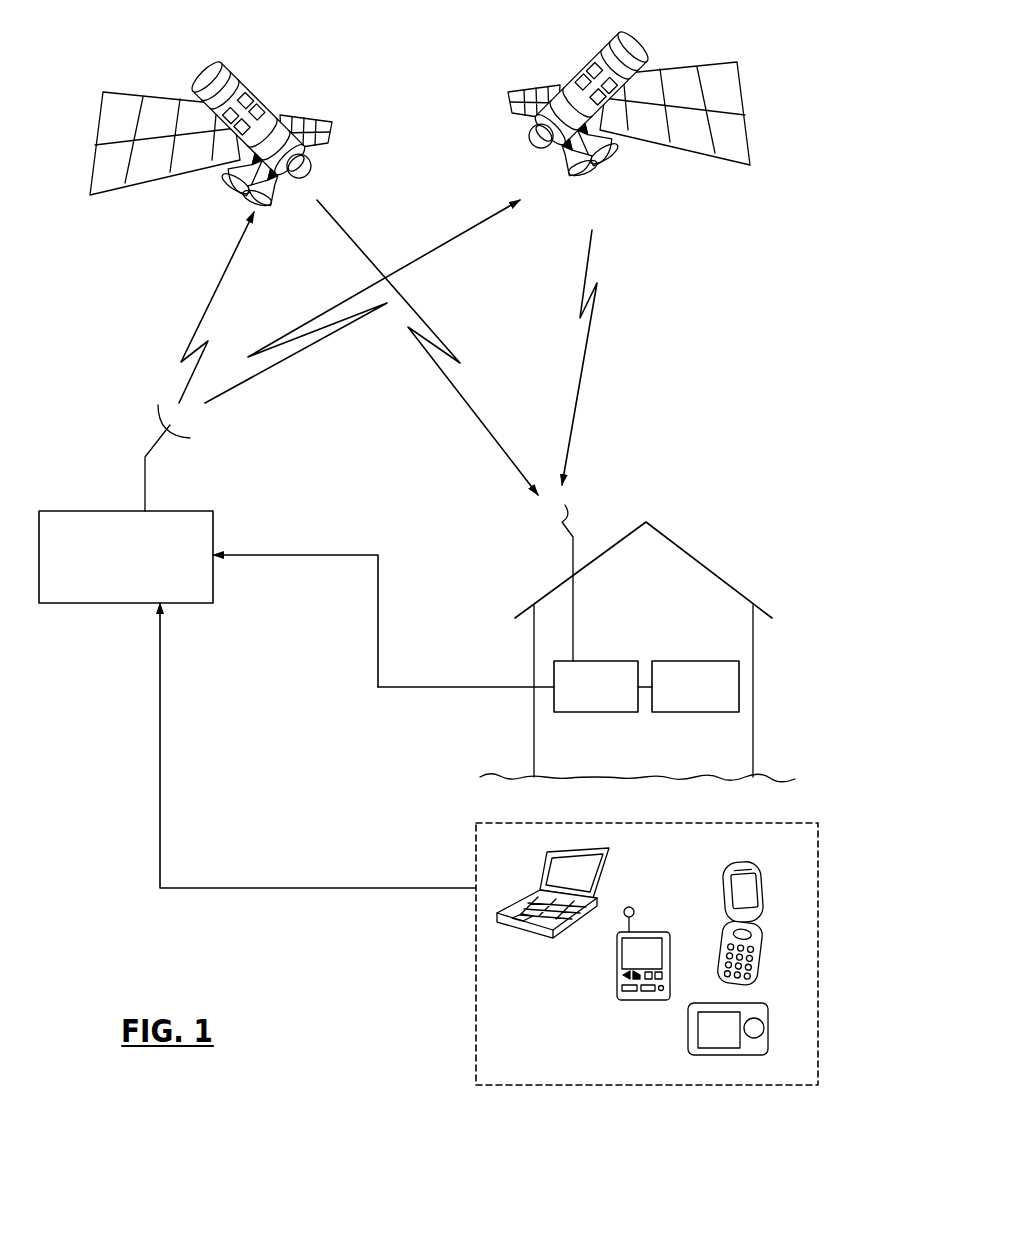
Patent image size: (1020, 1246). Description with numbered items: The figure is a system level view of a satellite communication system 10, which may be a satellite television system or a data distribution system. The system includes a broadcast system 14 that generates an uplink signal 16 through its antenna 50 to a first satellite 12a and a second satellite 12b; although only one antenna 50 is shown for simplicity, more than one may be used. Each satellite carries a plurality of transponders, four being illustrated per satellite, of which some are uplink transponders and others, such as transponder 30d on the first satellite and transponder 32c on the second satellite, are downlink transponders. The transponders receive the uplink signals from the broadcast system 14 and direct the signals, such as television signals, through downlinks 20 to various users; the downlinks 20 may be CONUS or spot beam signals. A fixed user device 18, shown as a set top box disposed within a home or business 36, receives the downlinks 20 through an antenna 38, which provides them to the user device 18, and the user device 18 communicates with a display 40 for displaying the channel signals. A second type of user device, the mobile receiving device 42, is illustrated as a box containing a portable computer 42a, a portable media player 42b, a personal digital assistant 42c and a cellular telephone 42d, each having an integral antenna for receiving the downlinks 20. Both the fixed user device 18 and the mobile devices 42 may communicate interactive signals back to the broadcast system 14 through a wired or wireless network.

The satellite communication system 10 is at (430, 56).
The first satellite 12a is at (193, 143).
The second satellite 12b is at (640, 114).
The broadcast system 14 is at (75, 605).
The uplink signal 16 is at (190, 335).
The fixed user device 18 is at (603, 660).
The downlinks 20 is at (458, 398).
The transponder 30d is at (247, 115).
The transponder 32c is at (578, 82).
The home or business 36 is at (693, 550).
The antenna 38 is at (558, 520).
The display 40 is at (693, 660).
The mobile receiving device 42 is at (475, 858).
The portable computer 42a is at (523, 933).
The portable media player 42b is at (765, 1008).
The personal digital assistant 42c is at (615, 982).
The cellular telephone 42d is at (765, 937).
The antenna 50 is at (172, 412).